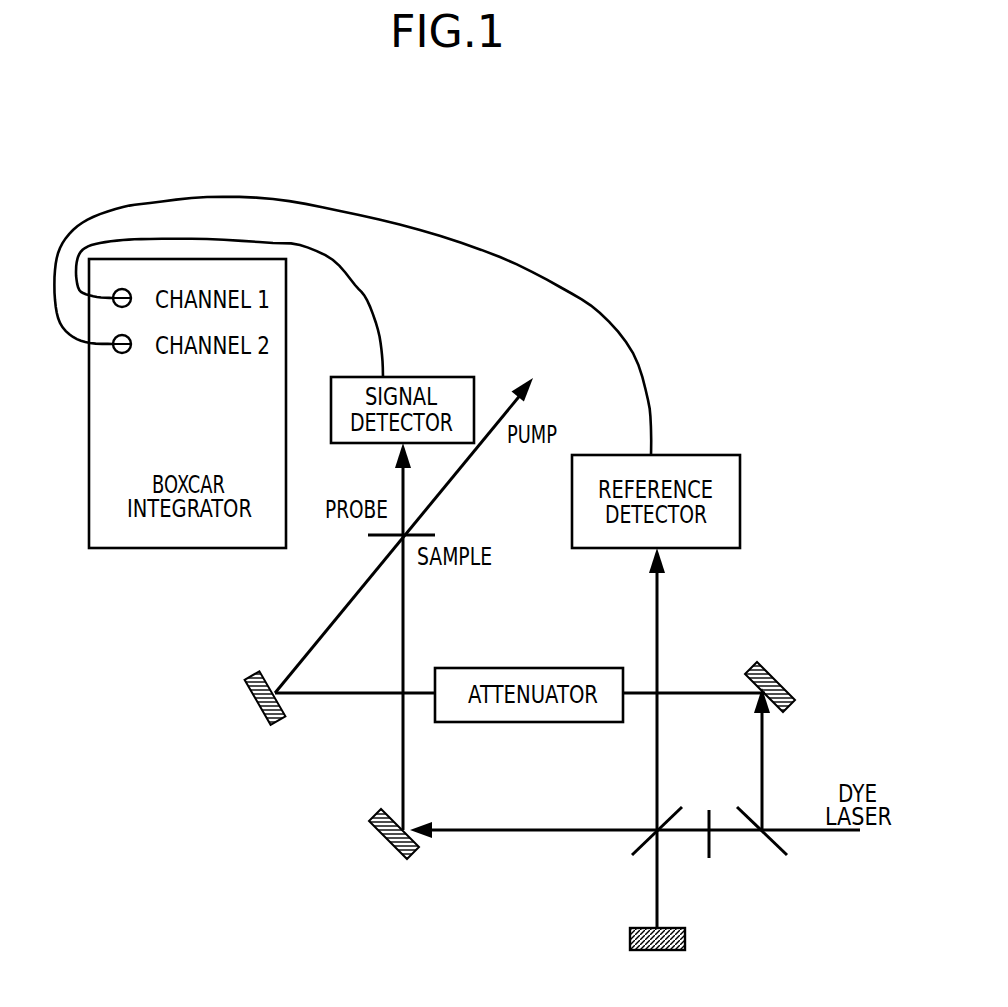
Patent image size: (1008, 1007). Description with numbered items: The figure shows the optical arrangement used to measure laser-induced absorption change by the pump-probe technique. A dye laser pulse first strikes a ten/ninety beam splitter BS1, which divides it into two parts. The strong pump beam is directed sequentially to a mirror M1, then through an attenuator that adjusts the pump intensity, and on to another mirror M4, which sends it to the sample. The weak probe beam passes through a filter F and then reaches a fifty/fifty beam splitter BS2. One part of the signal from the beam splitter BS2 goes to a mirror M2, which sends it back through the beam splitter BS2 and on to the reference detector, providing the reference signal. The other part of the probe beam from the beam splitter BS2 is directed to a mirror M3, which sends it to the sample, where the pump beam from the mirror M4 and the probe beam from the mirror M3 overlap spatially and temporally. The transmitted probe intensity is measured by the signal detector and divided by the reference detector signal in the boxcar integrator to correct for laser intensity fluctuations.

The mirror M1 is at (773, 684).
The mirror M2 is at (657, 955).
The mirror M3 is at (385, 836).
The mirror M4 is at (253, 699).
The 10/90 beam splitter BS1 is at (777, 846).
The 50/50 beam splitter BS2 is at (640, 846).
The filter F is at (708, 819).